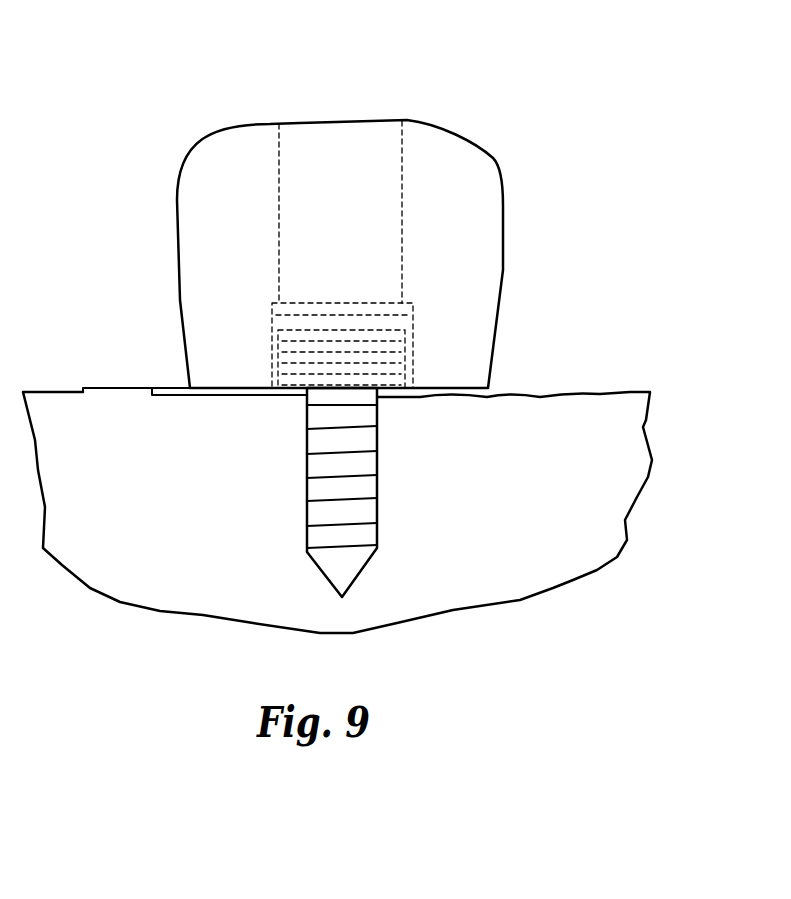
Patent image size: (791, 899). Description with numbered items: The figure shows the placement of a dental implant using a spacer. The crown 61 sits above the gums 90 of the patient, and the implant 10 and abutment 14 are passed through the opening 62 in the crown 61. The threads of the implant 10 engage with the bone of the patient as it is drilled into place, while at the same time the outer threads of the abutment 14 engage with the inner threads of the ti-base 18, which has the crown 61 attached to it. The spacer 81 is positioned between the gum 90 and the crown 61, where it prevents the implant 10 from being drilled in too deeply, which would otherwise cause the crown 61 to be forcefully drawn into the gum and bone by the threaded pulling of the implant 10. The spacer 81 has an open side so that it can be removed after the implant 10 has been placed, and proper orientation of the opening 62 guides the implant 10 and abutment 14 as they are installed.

The implant 10 is at (380, 443).
The abutment 14 is at (272, 348).
The ti-base 18 is at (413, 352).
The crown 61 is at (207, 266).
The opening 62 is at (383, 180).
The spacer 81 is at (168, 387).
The gums 90 is at (628, 392).